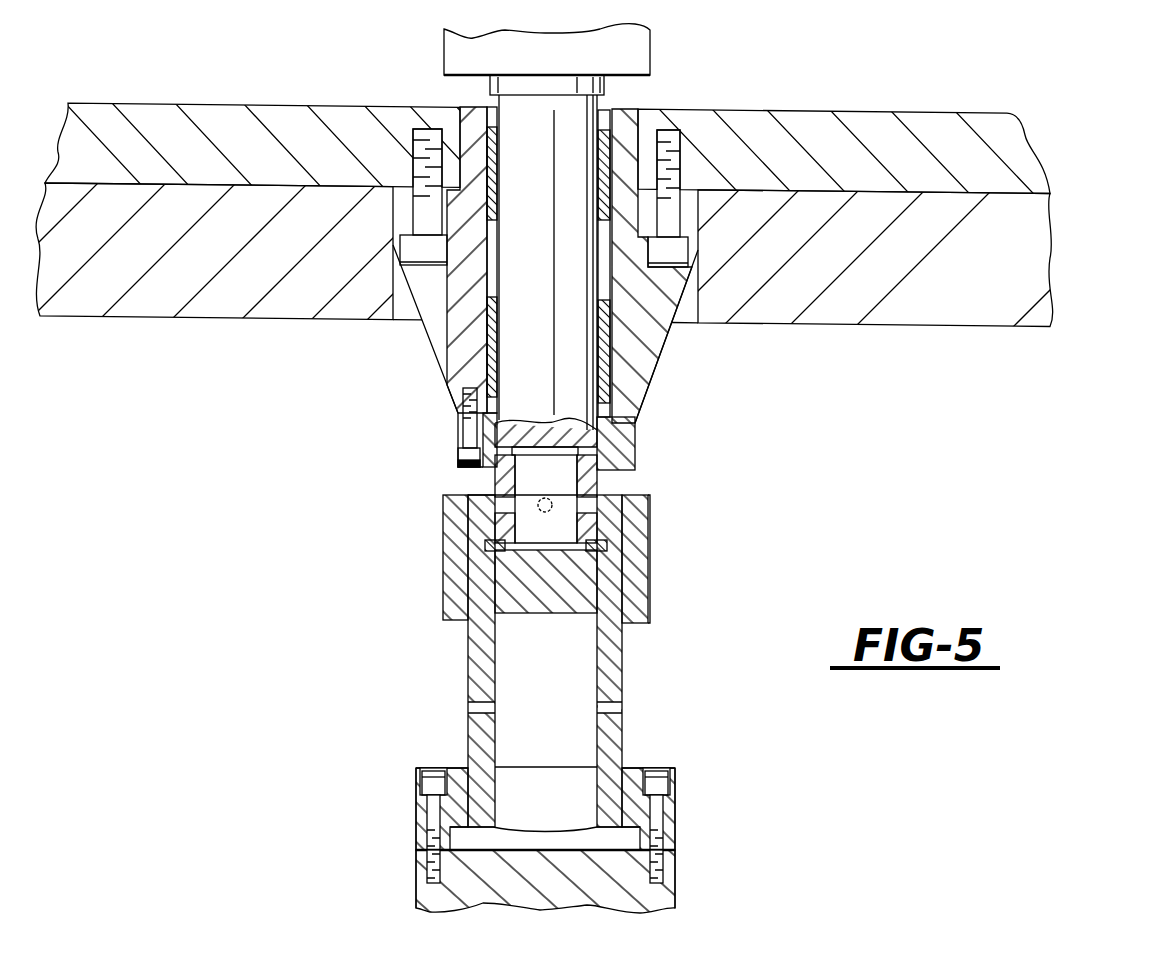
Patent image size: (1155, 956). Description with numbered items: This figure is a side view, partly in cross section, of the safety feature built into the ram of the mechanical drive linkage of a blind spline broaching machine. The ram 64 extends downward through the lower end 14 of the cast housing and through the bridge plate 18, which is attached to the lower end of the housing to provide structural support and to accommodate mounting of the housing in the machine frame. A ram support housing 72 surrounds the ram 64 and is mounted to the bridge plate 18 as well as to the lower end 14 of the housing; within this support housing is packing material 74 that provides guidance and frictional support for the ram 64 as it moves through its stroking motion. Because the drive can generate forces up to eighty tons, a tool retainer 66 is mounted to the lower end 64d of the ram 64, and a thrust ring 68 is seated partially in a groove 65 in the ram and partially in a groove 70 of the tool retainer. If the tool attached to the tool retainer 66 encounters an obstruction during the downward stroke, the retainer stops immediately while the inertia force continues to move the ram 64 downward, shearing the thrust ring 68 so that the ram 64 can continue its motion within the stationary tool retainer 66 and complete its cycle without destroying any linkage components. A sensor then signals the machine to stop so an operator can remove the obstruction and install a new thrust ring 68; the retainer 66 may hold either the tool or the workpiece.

The lower end 14 is at (1030, 158).
The bridge plate 18 is at (1057, 260).
The ram 64 is at (545, 256).
The lower end of the ram 64d is at (562, 618).
The groove 65 is at (490, 548).
The tool retainer 66 is at (677, 828).
The thrust ring 68 is at (607, 545).
The groove 70 is at (610, 552).
The ram support housing 72 is at (658, 357).
The packing material 74 is at (607, 155).